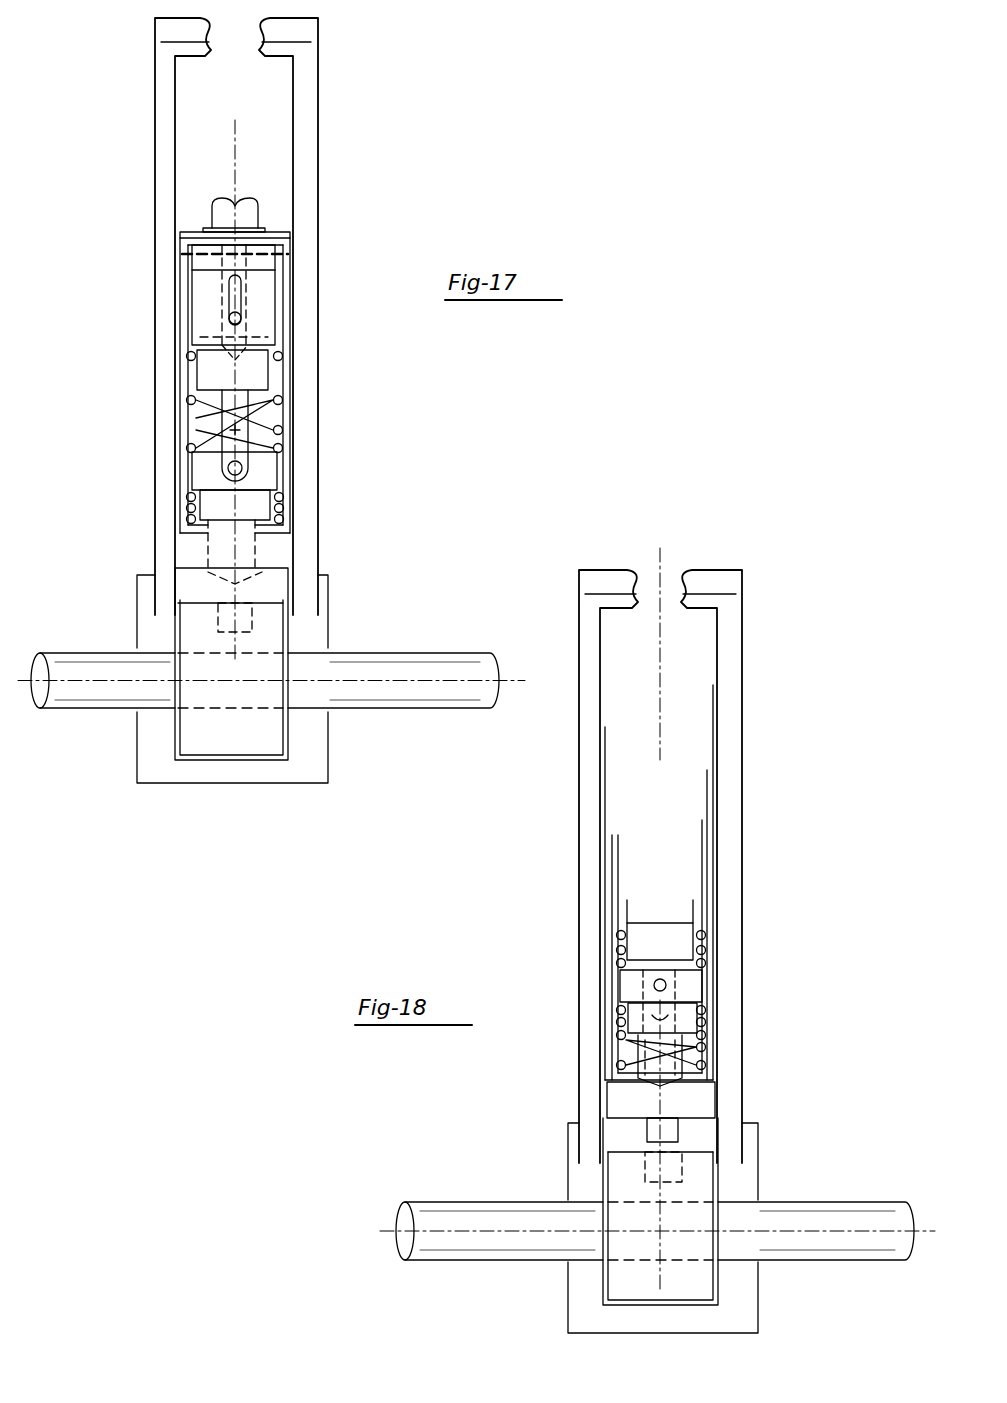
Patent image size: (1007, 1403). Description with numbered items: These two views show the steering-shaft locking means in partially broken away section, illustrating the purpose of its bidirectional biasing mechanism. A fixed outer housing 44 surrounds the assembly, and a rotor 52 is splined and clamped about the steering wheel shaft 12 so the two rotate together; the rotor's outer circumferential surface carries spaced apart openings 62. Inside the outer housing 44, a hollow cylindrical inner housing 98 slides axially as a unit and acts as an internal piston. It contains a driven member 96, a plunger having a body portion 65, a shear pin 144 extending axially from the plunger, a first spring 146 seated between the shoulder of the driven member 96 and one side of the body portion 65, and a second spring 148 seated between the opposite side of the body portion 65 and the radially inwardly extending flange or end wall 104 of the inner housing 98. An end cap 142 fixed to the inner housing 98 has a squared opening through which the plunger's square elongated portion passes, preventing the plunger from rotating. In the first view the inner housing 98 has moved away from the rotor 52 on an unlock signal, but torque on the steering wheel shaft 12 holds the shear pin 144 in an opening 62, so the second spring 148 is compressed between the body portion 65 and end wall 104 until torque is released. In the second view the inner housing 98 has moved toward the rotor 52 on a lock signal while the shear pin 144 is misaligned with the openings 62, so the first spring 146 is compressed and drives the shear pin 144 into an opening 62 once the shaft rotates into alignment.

In FIG. 17, the steering wheel shaft 12 is at (402, 695).
In FIG. 18, the steering wheel shaft 12 is at (845, 1212).
In FIG. 17, the outer housing 44 is at (330, 170).
In FIG. 18, the outer housing 44 is at (752, 745).
In FIG. 17, the rotor 52 is at (262, 742).
In FIG. 18, the rotor 52 is at (700, 1188).
In FIG. 17, the openings 62 is at (217, 632).
In FIG. 18, the openings 62 is at (650, 1153).
In FIG. 17, the body portion 65 is at (276, 468).
In FIG. 18, the body portion 65 is at (707, 985).
In FIG. 17, the driven member 96 is at (286, 322).
In FIG. 18, the driven member 96 is at (612, 875).
In FIG. 17, the inner housing 98 is at (182, 500).
In FIG. 18, the inner housing 98 is at (710, 1052).
In FIG. 17, the end wall (radially inwardly extending flange) 104 is at (270, 530).
In FIG. 18, the end cap 142 is at (700, 1097).
In FIG. 17, the shear pin 144 is at (228, 624).
In FIG. 18, the shear pin 144 is at (680, 1130).
In FIG. 17, the first spring 146 is at (272, 394).
In FIG. 18, the first spring 146 is at (707, 942).
In FIG. 17, the second spring 148 is at (282, 498).
In FIG. 18, the second spring 148 is at (708, 1022).